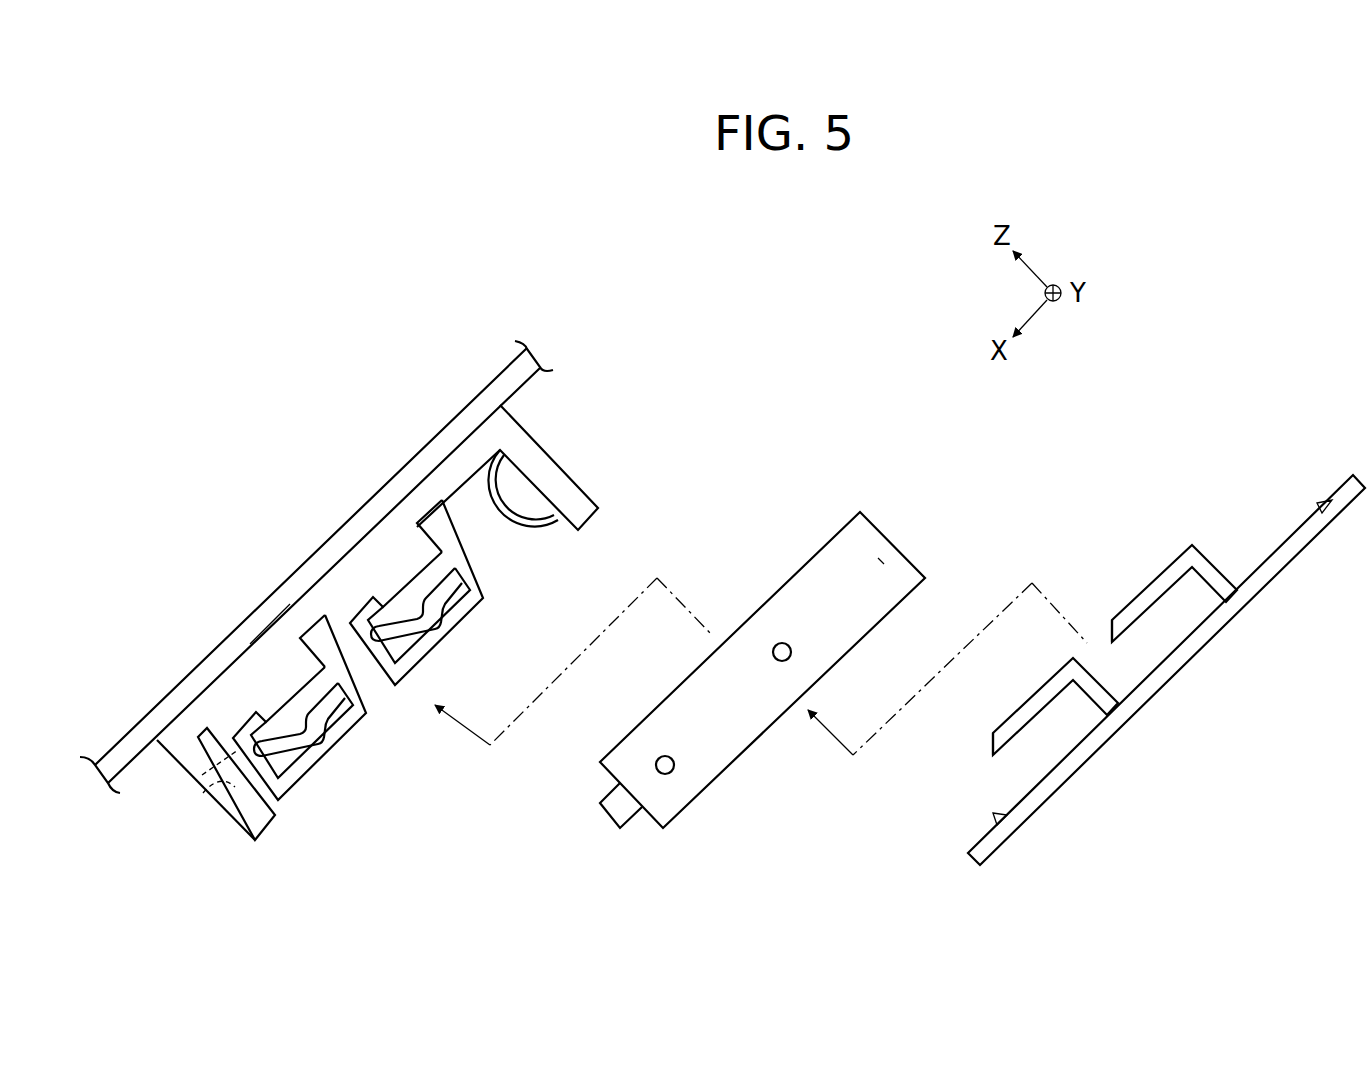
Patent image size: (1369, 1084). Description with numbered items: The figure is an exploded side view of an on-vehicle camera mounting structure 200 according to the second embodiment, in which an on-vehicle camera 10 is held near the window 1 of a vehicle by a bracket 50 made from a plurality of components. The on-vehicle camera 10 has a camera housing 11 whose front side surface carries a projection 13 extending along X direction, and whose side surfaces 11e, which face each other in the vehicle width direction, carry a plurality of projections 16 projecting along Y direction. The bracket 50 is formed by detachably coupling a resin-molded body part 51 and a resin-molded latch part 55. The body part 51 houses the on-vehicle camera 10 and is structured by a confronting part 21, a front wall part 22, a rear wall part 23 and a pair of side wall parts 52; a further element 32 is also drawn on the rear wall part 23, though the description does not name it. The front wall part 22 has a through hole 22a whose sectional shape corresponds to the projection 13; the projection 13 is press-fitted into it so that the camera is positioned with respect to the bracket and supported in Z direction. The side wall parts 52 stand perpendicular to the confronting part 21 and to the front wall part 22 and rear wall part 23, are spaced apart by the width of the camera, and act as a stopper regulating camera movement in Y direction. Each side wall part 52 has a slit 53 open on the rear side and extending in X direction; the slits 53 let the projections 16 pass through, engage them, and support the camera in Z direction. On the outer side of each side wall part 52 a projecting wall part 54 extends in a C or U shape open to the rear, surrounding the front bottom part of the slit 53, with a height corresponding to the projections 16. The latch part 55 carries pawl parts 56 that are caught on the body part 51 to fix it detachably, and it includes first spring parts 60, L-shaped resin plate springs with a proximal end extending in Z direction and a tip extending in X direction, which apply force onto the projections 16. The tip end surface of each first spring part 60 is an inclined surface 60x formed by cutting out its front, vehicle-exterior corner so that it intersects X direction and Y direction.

The on-vehicle camera mounting structure 200 is at (352, 318).
The window 1 is at (153, 705).
The confronting part 21 is at (312, 581).
The front wall part 22 is at (181, 773).
The through hole 22a is at (203, 793).
The bracket 50 is at (799, 612).
The body part 51 is at (590, 437).
The rear wall part 23 is at (600, 497).
The half-cylinder contact 32 is at (550, 537).
The side wall part 52 is at (328, 762).
The slit 53 is at (326, 669).
The projecting wall part 54 is at (341, 718).
The latch part 55 is at (1207, 504).
The on-vehicle camera 10 is at (838, 522).
The camera housing 11 is at (760, 742).
The side surface 11e is at (877, 565).
The projection 16 is at (780, 643).
The projection 13 is at (615, 802).
The first spring part 60 is at (1135, 588).
The inclined surface 60x is at (1111, 630).
The pawl part 56 is at (1294, 525).